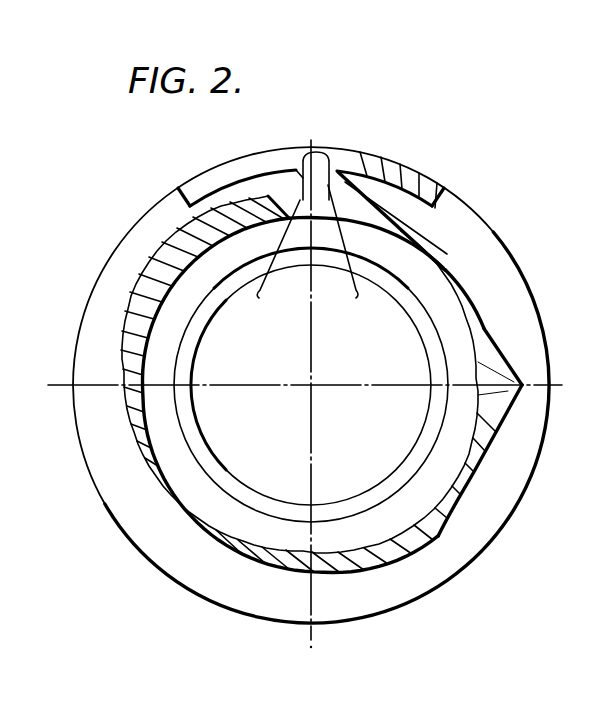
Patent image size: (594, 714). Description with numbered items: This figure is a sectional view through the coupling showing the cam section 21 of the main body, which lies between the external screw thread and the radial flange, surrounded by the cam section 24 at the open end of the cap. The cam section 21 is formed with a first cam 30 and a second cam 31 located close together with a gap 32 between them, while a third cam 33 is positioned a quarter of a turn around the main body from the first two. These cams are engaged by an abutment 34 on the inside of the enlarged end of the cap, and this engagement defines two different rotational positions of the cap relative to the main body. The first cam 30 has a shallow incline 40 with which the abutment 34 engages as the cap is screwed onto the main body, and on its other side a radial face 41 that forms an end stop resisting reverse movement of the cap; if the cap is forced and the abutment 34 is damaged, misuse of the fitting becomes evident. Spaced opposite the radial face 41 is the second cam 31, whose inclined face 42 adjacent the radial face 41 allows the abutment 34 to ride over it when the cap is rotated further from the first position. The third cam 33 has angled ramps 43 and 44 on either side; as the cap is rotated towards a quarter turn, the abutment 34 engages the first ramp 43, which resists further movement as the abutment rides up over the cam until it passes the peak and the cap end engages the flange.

The cam section 21 is at (137, 283).
The cam section 24 is at (304, 172).
The first cam 30 is at (283, 165).
The second cam 31 is at (345, 170).
The gap 32 is at (267, 263).
The third cam 33 is at (512, 387).
The abutment 34 is at (318, 162).
The shallow incline 40 is at (207, 224).
The radial face 41 is at (311, 196).
The inclined face 42 is at (347, 256).
The first ramp 43 is at (500, 345).
The ramp 44 is at (490, 420).